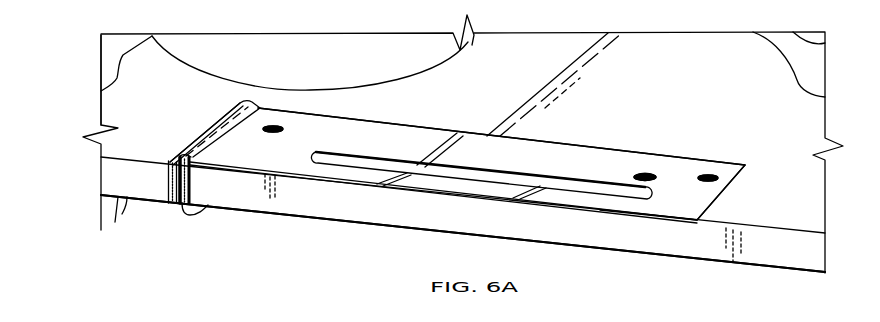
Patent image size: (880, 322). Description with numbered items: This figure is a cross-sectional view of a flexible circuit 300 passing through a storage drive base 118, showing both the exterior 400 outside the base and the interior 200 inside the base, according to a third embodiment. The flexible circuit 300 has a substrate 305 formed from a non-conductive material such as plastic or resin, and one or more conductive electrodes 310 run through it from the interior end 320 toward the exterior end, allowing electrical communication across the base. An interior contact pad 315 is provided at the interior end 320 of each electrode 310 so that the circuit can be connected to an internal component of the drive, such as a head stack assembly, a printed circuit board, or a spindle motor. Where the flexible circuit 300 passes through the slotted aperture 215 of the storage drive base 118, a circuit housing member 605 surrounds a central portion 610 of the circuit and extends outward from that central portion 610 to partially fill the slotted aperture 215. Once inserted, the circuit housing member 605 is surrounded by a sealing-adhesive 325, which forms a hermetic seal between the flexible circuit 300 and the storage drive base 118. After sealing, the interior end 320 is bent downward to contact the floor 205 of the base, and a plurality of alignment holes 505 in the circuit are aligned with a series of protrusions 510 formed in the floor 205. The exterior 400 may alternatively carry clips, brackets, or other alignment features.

The storage drive base 118 is at (170, 103).
The interior 200 is at (637, 79).
The floor 205 is at (540, 224).
The slotted aperture 215 is at (172, 198).
The flexible circuit 300 is at (568, 158).
The substrate 305 is at (513, 145).
The conductive electrodes 310 is at (379, 147).
The interior contact pad 315 is at (640, 200).
The interior end 320 is at (721, 196).
The sealing-adhesive 325 is at (184, 216).
The exterior 400 is at (316, 256).
The alignment holes 505 is at (283, 128).
The protrusions 510 is at (277, 126).
The circuit housing member 605 is at (170, 161).
The central portion 610 is at (218, 126).